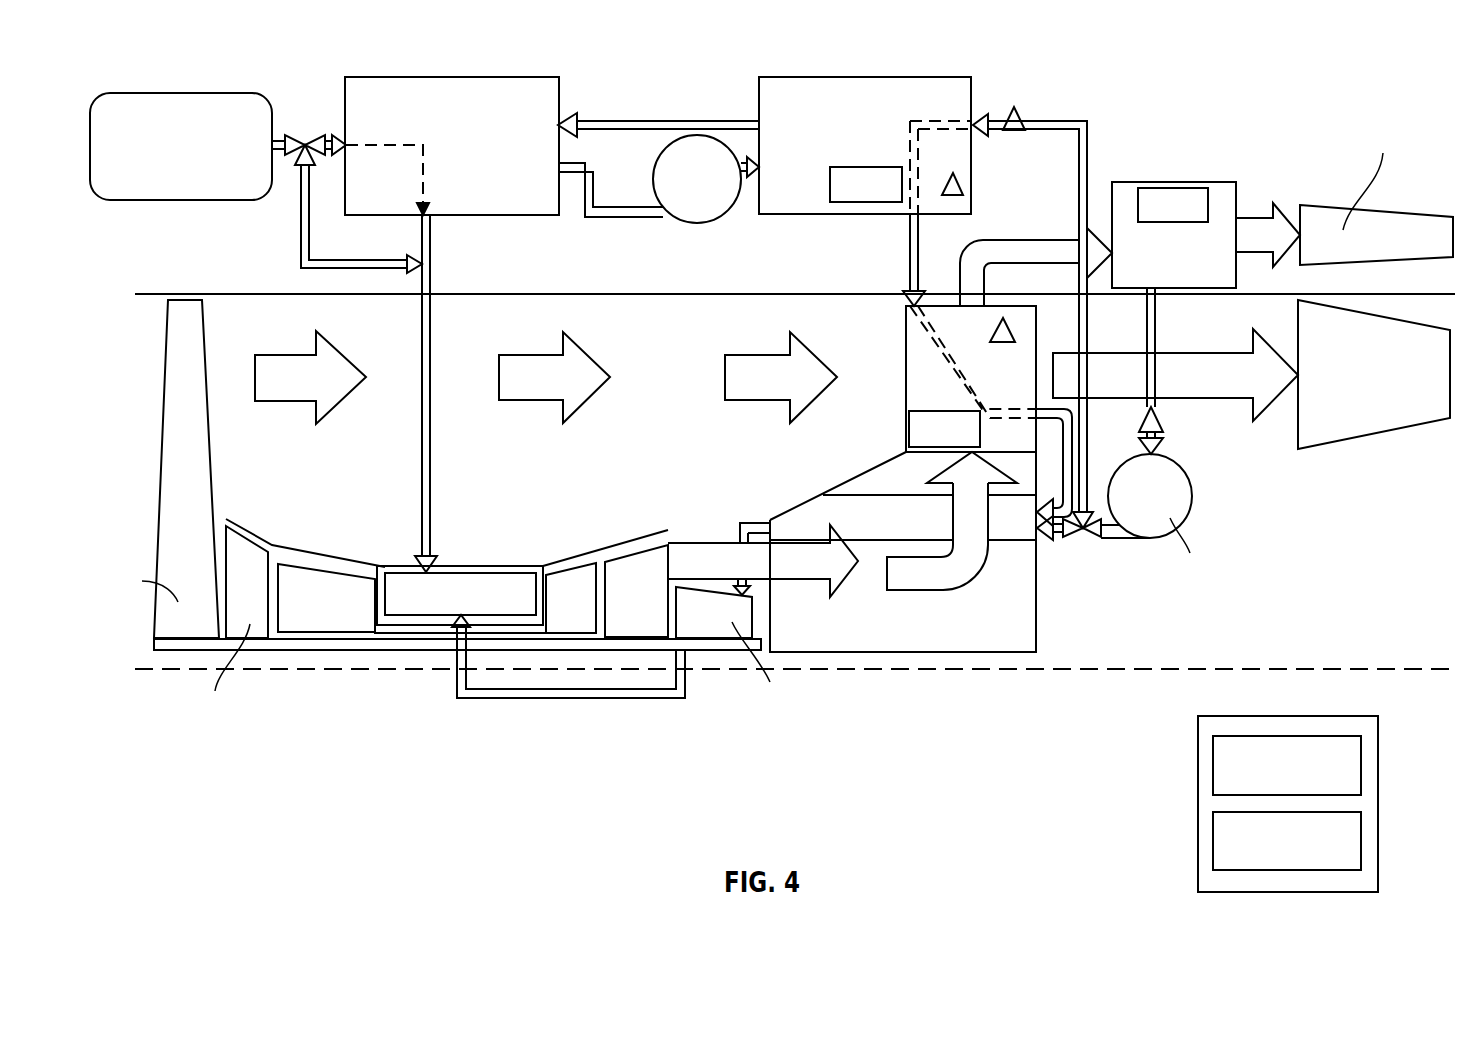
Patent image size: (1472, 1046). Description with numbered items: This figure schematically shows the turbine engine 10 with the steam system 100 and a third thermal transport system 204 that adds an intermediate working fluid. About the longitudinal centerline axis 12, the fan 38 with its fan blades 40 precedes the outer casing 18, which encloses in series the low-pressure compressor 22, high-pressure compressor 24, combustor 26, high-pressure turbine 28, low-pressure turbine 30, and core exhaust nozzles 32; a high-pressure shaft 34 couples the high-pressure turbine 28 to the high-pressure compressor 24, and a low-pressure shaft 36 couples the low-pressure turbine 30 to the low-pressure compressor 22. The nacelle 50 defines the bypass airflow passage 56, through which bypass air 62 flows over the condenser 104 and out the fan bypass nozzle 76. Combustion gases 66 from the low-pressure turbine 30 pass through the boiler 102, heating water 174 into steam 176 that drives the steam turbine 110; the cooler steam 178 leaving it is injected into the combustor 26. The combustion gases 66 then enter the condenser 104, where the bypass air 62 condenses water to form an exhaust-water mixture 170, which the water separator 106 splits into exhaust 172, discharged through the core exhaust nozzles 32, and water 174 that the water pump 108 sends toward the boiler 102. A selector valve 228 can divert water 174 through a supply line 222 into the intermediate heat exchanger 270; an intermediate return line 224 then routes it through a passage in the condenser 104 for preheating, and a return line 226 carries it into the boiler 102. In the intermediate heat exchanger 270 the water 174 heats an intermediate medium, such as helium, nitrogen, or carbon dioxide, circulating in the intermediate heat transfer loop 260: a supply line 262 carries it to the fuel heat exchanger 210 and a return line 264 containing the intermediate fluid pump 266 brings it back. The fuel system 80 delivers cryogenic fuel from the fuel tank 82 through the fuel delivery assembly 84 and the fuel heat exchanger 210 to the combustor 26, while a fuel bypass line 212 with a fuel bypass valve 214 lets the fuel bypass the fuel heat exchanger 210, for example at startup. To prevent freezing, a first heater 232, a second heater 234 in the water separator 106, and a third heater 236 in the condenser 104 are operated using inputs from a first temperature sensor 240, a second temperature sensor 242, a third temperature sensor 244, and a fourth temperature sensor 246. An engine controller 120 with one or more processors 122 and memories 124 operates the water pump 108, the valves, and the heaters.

The turbine engine 10 is at (185, 283).
The longitudinal centerline axis 12 is at (1127, 669).
The outer casing 18 is at (488, 567).
The low-pressure compressor 22 is at (248, 537).
The high-pressure compressor 24 is at (337, 574).
The combustor 26 is at (413, 578).
The high-pressure turbine 28 is at (567, 588).
The low-pressure turbine 30 is at (643, 537).
The core exhaust nozzles 32 is at (1420, 215).
The high-pressure shaft 34 is at (412, 630).
The low-pressure shaft 36 is at (320, 644).
The fan 38 is at (157, 441).
The fan blades 40 is at (167, 333).
The nacelle 50 is at (484, 293).
The bypass airflow passage 56 is at (692, 316).
The bypass air 62 is at (532, 401).
The combustion gases 66 is at (703, 542).
The fan bypass nozzle 76 is at (1380, 433).
The fuel system 80 is at (300, 72).
The fuel tank 82 is at (212, 93).
The fuel delivery assembly 84 is at (429, 348).
The steam system 100 is at (1215, 55).
The boiler 102 is at (893, 652).
The condenser 104 is at (906, 333).
The water separator 106 is at (1172, 182).
The water pump 108 is at (1195, 497).
The steam turbine 110 is at (727, 593).
The engine controller 120 is at (1378, 795).
The processors 122 is at (1213, 762).
The memories 124 is at (1213, 843).
The exhaust-water mixture 170 is at (997, 238).
The exhaust 172 is at (1265, 205).
The water 174 is at (1155, 340).
The steam 176 is at (763, 520).
The steam 178 is at (575, 698).
The third thermal transport system 204 is at (858, 68).
The fuel heat exchanger 210 is at (492, 77).
The fuel bypass line 212 is at (300, 228).
The fuel bypass valve 214 is at (318, 143).
The supply line 222 is at (1079, 120).
The intermediate return line 224 is at (910, 255).
The return line 226 is at (1068, 467).
The selector valve 228 is at (1086, 540).
The first heater 232 is at (845, 202).
The second heater 234 is at (1205, 188).
The third heater 236 is at (910, 418).
The first temperature sensor 240 is at (1020, 113).
The second temperature sensor 242 is at (962, 190).
The third temperature sensor 244 is at (1160, 420).
The fourth temperature sensor 246 is at (990, 333).
The intermediate heat transfer loop 260 is at (603, 85).
The supply line 262 is at (713, 120).
The return line 264 is at (607, 218).
The intermediate fluid pump 266 is at (687, 208).
The intermediate heat exchanger 270 is at (930, 77).